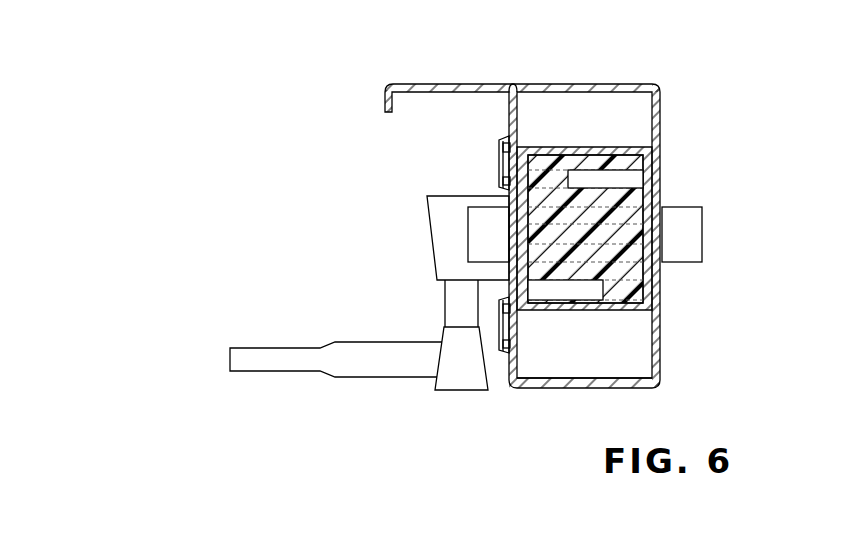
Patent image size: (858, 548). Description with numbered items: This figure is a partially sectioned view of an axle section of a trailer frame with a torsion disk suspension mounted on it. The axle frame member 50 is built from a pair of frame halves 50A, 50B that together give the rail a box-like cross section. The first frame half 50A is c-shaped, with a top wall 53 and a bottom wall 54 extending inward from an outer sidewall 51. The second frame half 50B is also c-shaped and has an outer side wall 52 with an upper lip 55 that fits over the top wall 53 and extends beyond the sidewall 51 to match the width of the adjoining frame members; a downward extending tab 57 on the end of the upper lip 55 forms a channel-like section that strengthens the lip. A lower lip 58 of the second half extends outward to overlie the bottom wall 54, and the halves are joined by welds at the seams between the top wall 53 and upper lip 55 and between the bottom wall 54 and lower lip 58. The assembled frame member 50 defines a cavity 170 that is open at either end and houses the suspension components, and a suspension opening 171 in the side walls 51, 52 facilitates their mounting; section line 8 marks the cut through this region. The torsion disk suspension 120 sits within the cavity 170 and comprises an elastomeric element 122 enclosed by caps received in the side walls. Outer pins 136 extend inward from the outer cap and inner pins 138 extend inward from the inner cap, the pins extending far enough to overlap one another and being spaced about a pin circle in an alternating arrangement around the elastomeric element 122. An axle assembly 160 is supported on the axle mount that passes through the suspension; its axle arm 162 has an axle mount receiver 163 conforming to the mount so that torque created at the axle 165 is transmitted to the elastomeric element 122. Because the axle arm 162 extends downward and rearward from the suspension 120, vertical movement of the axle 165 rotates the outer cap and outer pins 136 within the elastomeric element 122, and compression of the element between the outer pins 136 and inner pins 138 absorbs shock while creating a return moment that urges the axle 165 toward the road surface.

The axle rail 50 is at (362, 76).
The first frame half 50A is at (493, 111).
The second frame half 50B is at (674, 96).
The outer sidewall 51 is at (510, 128).
The outer side wall 52 is at (662, 123).
The top wall 53 is at (627, 92).
The bottom wall 54 is at (615, 384).
The upper lip 55 is at (420, 86).
The downward extending tab 57 is at (383, 107).
The lower lip 58 is at (551, 384).
The section line 8 is at (588, 150).
The torsion disk suspension 120 is at (592, 129).
The elastomeric element 122 is at (603, 306).
The outer pins 136 is at (622, 178).
The inner pins 138 is at (615, 237).
The axle assembly 160 is at (372, 193).
The axle arm 162 is at (432, 232).
The axle mount receiver 163 is at (482, 215).
The axle 165 is at (390, 350).
The cavity 170 is at (592, 367).
The suspension opening 171 is at (497, 218).